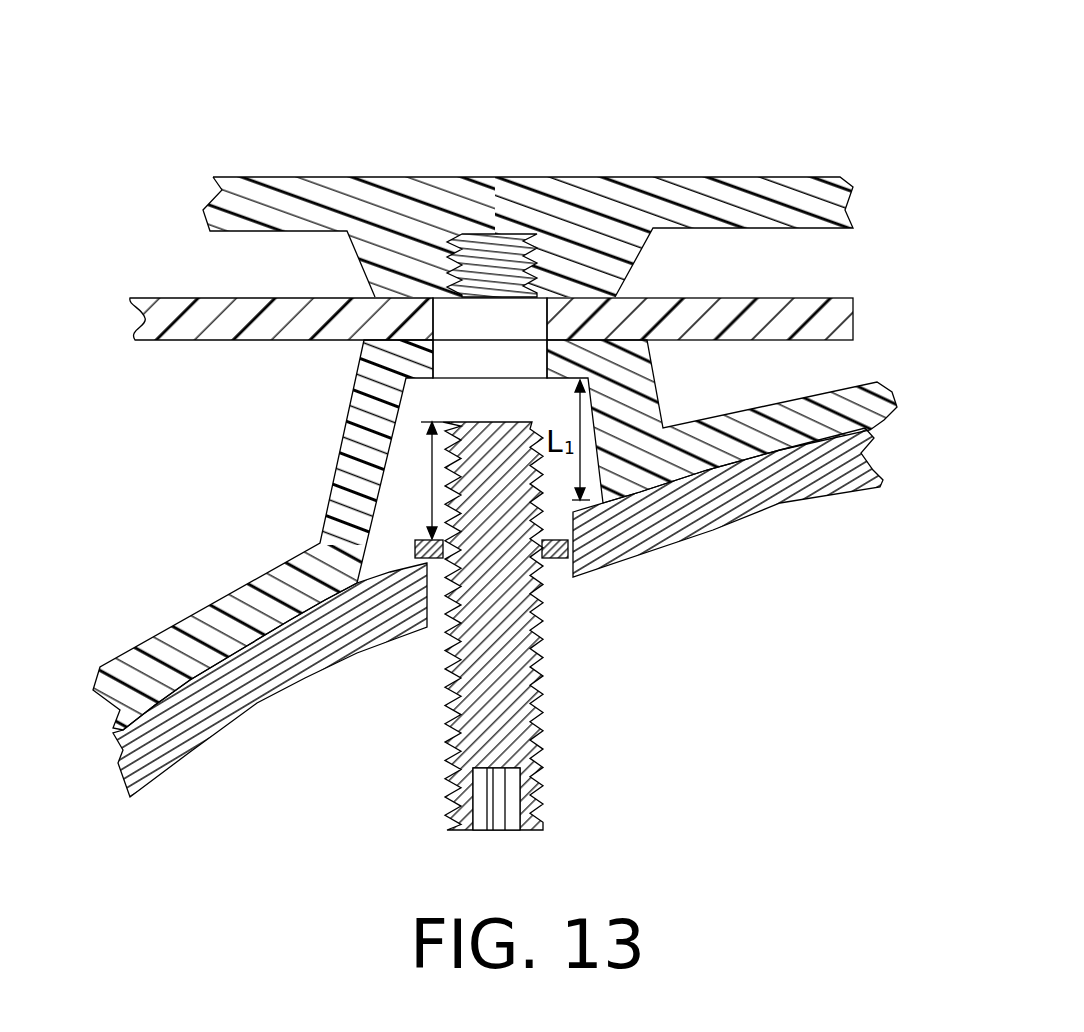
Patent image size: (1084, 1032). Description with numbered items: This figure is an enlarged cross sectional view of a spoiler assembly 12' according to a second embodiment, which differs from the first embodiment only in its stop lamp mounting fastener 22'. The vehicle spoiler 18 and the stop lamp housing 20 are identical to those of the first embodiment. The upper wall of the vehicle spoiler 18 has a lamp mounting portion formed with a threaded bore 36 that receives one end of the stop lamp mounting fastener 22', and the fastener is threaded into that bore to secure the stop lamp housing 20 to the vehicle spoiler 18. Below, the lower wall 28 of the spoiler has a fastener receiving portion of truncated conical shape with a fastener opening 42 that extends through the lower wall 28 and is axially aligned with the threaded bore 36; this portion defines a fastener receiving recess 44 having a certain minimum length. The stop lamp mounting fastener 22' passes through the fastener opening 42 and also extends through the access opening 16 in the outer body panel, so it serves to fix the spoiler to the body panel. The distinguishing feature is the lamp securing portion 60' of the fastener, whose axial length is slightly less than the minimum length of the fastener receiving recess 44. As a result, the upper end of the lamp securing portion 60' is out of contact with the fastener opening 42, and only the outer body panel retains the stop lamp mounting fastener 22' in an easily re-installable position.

The spoiler assembly 12' is at (629, 51).
The vehicle spoiler 18 is at (758, 188).
The threaded bore 36 is at (488, 247).
The stop lamp housing 20 is at (795, 307).
The fastener opening 42 is at (442, 360).
The fastener receiving recess 44 is at (383, 493).
The lower wall 28 is at (790, 415).
The access opening 16 is at (422, 610).
The lamp securing portion 60' is at (409, 479).
The stop lamp mounting fastener 22' is at (546, 626).